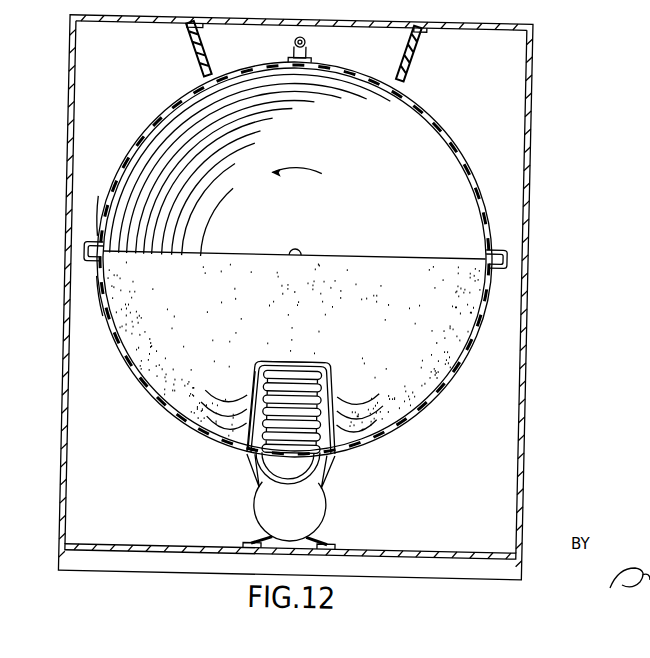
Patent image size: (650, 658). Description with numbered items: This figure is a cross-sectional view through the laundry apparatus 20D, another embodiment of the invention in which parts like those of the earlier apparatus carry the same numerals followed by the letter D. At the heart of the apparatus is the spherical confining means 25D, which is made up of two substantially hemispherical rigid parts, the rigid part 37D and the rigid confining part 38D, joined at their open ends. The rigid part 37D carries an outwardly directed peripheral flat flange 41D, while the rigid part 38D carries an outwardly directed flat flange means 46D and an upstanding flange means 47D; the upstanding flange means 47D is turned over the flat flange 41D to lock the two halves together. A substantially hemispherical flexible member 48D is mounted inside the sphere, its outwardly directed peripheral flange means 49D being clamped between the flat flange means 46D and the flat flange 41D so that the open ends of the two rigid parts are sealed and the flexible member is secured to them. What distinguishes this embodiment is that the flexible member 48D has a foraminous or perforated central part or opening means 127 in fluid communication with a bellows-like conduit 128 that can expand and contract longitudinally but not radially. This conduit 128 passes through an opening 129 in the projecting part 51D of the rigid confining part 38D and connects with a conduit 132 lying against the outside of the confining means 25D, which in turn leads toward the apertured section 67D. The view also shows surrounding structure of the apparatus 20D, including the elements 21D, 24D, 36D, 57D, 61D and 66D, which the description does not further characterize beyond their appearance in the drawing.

The laundry apparatus 20D is at (563, 97).
The housing 21D is at (527, 415).
The top wall 24D is at (273, 20).
The spherical confining means 25D is at (429, 112).
The bulb 36D is at (267, 501).
The hemispherical rigid part 37D is at (155, 118).
The rigid confining part 38D is at (435, 415).
The peripheral flat flange 41D is at (96, 244).
The flat flange means 46D is at (96, 279).
The upstanding flange means 47D is at (87, 251).
The flexible member 48D is at (388, 260).
The peripheral flange means 49D is at (86, 264).
The projecting part 51D is at (251, 399).
The neck 57D is at (249, 459).
The heat exchanger housing 61D is at (272, 360).
The pivot ring 66D is at (334, 61).
The apertured section 67D is at (298, 64).
The foraminous central part 127 is at (307, 362).
The bellows-like conduit 128 is at (325, 401).
The opening 129 is at (260, 373).
The conduit 132 is at (319, 488).